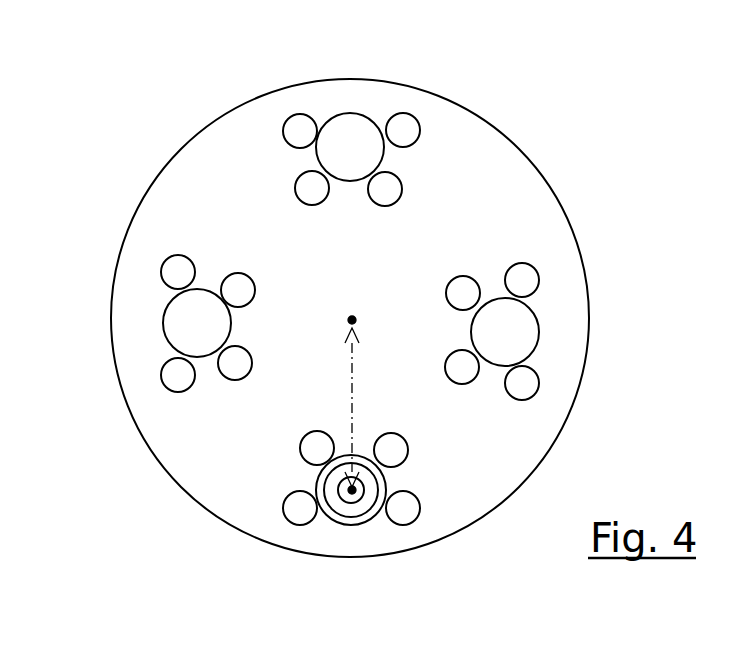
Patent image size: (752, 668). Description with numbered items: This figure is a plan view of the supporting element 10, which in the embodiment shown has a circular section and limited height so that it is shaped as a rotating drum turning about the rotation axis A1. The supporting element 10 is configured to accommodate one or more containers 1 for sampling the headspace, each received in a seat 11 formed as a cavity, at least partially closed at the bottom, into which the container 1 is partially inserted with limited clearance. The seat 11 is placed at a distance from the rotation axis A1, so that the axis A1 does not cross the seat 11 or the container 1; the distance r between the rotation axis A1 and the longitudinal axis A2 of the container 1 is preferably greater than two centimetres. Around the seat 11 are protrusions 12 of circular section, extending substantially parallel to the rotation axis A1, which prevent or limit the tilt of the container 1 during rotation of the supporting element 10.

The supporting element 10 is at (218, 202).
The rotation axis A1 is at (352, 320).
The longitudinal axis of the container A2 is at (351, 490).
The container 1 is at (282, 500).
The seat 11 is at (328, 518).
The protrusions 12 is at (297, 508).
The distance between the two axes r is at (357, 407).